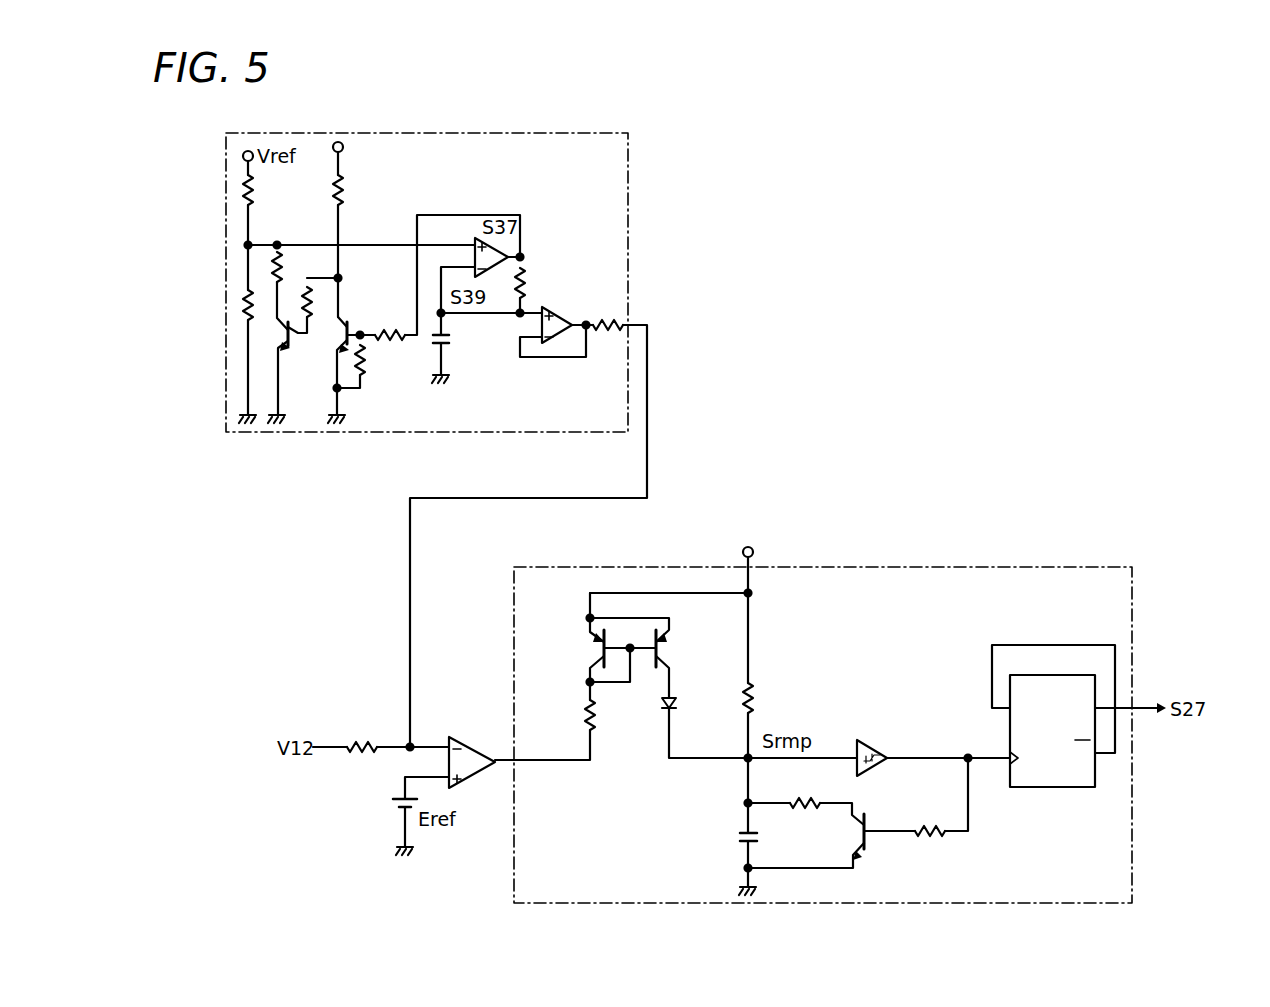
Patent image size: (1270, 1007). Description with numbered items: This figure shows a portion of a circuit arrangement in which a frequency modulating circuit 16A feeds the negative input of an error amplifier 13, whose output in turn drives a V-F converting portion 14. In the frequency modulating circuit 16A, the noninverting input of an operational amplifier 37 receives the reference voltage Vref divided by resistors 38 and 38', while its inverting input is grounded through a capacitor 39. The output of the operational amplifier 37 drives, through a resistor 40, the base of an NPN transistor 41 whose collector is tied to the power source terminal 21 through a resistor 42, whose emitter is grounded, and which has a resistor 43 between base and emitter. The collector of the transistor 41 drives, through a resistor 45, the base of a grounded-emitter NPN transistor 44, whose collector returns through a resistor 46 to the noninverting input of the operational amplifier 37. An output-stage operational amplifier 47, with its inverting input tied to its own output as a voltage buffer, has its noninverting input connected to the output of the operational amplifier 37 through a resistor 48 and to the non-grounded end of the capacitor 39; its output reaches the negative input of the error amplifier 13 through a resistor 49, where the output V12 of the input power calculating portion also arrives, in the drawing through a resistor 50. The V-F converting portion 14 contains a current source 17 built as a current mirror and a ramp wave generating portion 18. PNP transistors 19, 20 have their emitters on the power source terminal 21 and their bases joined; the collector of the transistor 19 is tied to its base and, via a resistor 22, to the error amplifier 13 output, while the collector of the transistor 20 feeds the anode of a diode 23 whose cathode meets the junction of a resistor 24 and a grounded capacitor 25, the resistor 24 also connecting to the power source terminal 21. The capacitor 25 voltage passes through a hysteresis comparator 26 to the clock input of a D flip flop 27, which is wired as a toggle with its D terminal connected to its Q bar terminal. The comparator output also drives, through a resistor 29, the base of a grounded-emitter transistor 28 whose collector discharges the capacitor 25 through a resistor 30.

The error amplifier 13 is at (467, 743).
The V-F converting portion 14 is at (1132, 825).
The frequency modulating circuit 16A is at (627, 180).
The current source 17 is at (674, 577).
The ramp wave generating portion 18 is at (870, 666).
The PNP transistor 19 is at (597, 638).
The PNP transistor 20 is at (668, 662).
The power source terminal 21 is at (344, 147).
The resistor 22 is at (588, 738).
The diode 23 is at (667, 710).
The resistor 24 is at (753, 700).
The capacitor 25 is at (760, 845).
The hysteresis comparator 26 is at (881, 748).
The D flip flop 27 is at (1048, 788).
The transistor 28 is at (867, 843).
The resistor 29 is at (920, 833).
The resistor 30 is at (805, 793).
The operational amplifier 37 is at (508, 240).
The resistor 38 is at (219, 211).
The resistor 38' is at (219, 326).
The capacitor 39 is at (450, 346).
The resistor 40 is at (392, 346).
The NPN transistor 41 is at (350, 326).
The resistor 42 is at (345, 198).
The resistor 43 is at (362, 368).
The NPN transistor 44 is at (289, 348).
The resistor 45 is at (311, 310).
The resistor 46 is at (283, 268).
The operational amplifier 47 is at (559, 308).
The resistor 48 is at (524, 277).
The resistor 49 is at (626, 325).
The resistor 50 is at (358, 740).